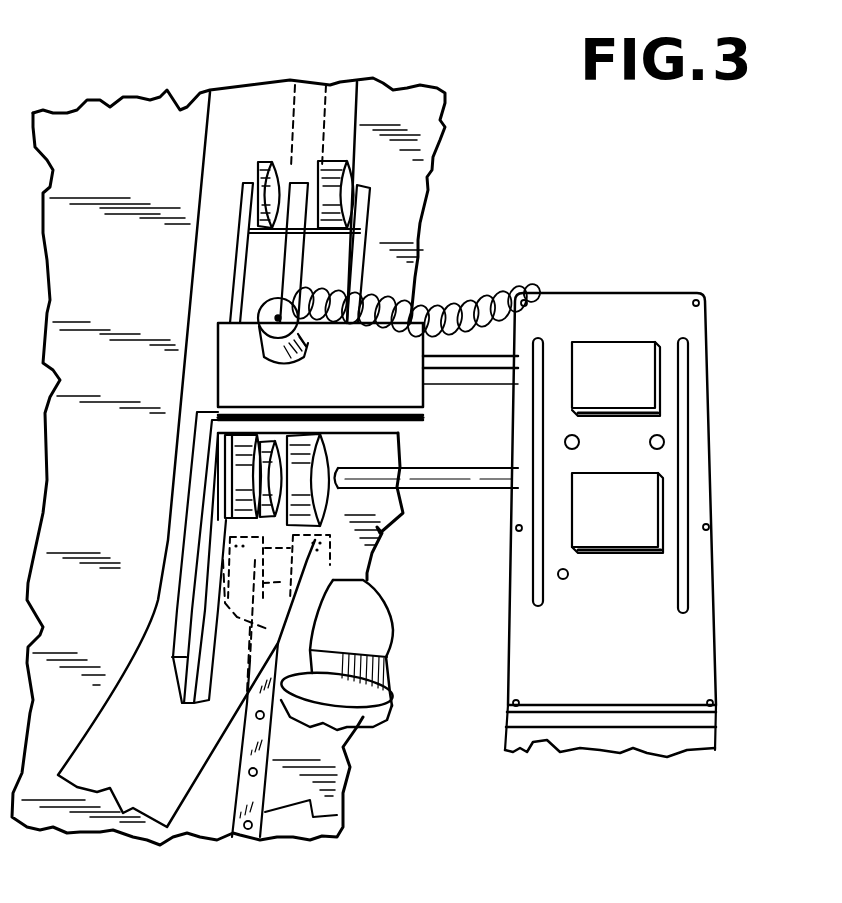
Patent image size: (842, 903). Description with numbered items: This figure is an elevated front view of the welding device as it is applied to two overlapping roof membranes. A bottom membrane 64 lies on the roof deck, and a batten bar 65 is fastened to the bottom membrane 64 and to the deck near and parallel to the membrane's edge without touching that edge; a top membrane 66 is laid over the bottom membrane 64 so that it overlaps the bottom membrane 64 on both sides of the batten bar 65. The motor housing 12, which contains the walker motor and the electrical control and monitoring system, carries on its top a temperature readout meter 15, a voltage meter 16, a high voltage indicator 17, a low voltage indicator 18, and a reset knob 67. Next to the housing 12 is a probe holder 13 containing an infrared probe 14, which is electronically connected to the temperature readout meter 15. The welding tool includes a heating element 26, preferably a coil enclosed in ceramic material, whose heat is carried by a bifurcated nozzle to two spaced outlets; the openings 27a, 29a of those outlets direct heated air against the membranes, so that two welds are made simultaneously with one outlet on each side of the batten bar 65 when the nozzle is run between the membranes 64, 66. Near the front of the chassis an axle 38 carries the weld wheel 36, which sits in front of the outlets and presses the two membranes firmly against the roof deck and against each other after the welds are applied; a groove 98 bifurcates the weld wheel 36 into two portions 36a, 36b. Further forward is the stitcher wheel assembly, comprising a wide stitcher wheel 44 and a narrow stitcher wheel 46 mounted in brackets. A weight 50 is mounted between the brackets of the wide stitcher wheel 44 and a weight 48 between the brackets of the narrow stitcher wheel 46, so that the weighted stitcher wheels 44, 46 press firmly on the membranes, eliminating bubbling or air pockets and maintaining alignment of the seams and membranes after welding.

The motor housing 12 is at (695, 737).
The probe holder 13 is at (233, 345).
The infrared probe 14 is at (270, 314).
The temperature readout meter 15 is at (640, 373).
The voltage meter 16 is at (653, 527).
The high voltage indicator 17 is at (665, 443).
The low voltage indicator 18 is at (564, 442).
The heating element 26 is at (384, 731).
The opening of outlet 27a is at (355, 552).
The opening of outlet 29a is at (186, 553).
The weld wheel 36 is at (222, 502).
The weld wheel portion 36a is at (237, 455).
The weld wheel portion 36b is at (320, 457).
The axle 38 is at (474, 484).
The wide stitcher wheel 44 is at (347, 160).
The narrow stitcher wheel 46 is at (247, 192).
The weight 48 is at (252, 245).
The weight 50 is at (400, 254).
The bottom membrane 64 is at (443, 103).
The batten bar 65 is at (337, 812).
The top membrane 66 is at (255, 116).
The reset knob 67 is at (557, 574).
The groove 98 is at (278, 453).